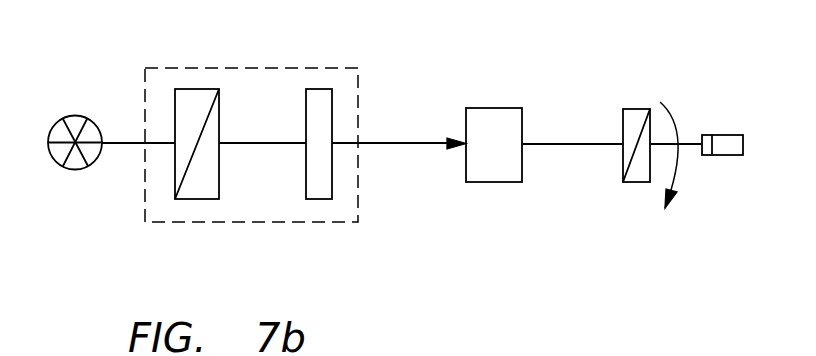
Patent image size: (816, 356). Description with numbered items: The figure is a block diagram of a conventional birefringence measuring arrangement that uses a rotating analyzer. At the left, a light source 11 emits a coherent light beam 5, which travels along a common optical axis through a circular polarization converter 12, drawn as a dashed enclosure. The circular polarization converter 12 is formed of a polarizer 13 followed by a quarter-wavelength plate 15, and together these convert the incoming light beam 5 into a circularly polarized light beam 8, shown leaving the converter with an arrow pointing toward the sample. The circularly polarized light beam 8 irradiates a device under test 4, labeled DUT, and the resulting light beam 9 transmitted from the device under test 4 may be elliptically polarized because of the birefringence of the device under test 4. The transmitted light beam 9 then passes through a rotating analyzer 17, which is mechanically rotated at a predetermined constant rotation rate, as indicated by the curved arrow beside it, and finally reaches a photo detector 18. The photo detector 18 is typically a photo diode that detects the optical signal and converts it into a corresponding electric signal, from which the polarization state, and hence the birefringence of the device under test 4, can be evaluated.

The light source 11 is at (77, 115).
The light beam 5 is at (117, 143).
The circular polarization converter 12 is at (275, 68).
The polarizer 13 is at (195, 89).
The ¼ wavelength plate 15 is at (312, 89).
The circularly polarized light beam 8 is at (415, 147).
The device under test 4 is at (479, 108).
The light beam 9 is at (585, 147).
The rotating analyzer 17 is at (630, 109).
The photo detector 18 is at (713, 135).